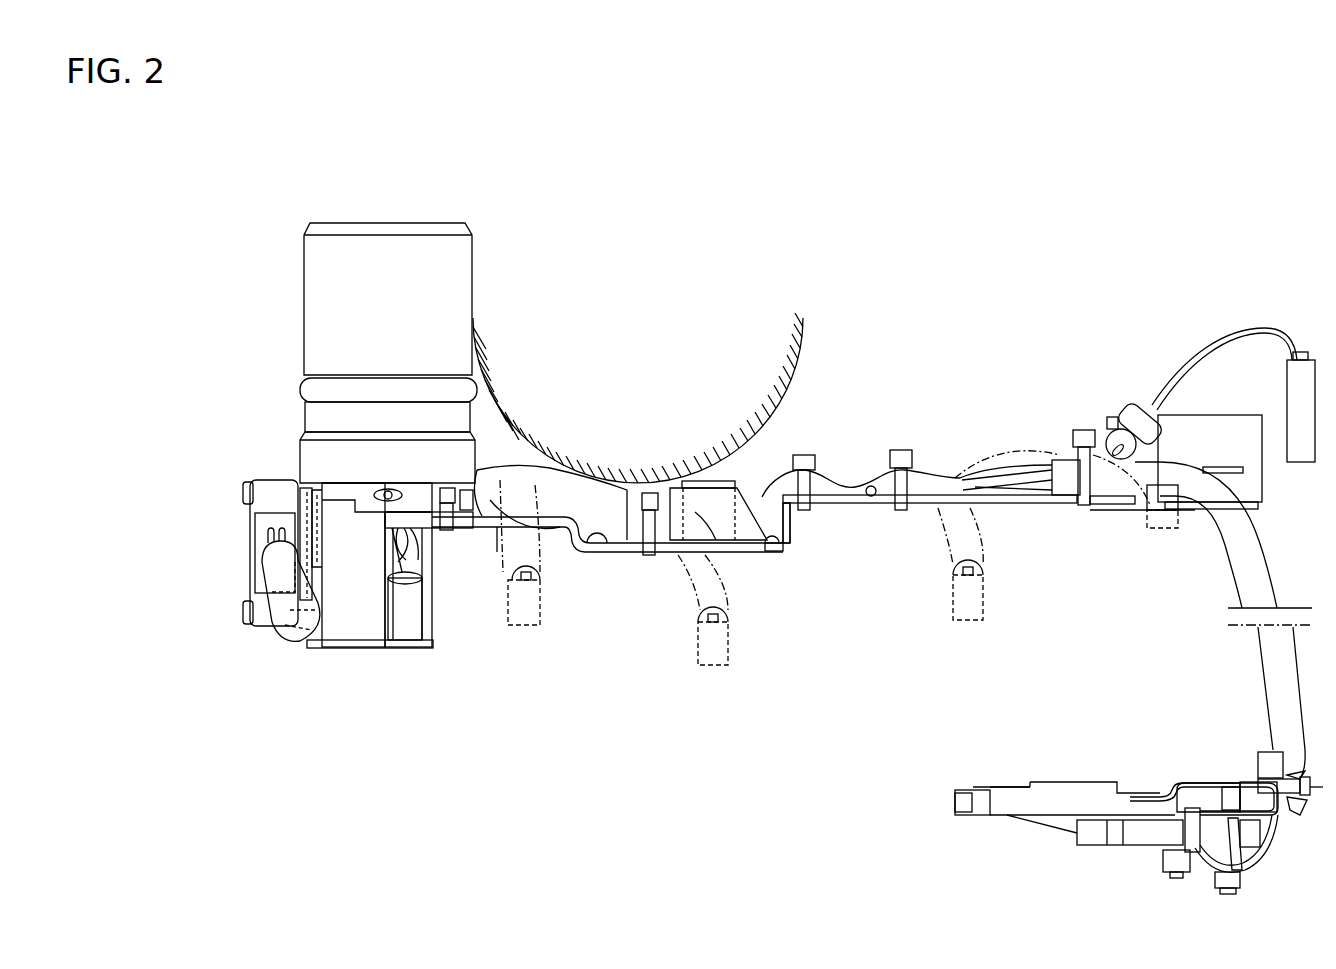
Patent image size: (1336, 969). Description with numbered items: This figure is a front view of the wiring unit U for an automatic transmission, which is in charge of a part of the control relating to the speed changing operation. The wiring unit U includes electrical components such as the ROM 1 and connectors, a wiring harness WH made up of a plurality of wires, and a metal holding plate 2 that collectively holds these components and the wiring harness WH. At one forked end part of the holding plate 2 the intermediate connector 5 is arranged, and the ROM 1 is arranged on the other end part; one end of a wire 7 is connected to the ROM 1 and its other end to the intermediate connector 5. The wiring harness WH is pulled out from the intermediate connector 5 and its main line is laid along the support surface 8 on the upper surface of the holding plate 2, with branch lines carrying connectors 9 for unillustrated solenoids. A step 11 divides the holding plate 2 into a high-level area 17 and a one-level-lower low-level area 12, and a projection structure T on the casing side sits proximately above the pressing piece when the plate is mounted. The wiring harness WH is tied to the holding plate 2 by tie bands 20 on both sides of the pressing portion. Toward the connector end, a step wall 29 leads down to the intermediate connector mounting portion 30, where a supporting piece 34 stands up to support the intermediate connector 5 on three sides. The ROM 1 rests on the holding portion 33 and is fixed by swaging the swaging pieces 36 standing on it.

The ROM 1 is at (270, 500).
The holding plate 2 is at (794, 545).
The intermediate connector 5 is at (312, 305).
The wire 7 is at (300, 640).
The support surface 8 is at (610, 556).
The connector 9 is at (527, 625).
The step 11 is at (790, 522).
The low-level area 12 is at (786, 550).
The high-level area 17 is at (869, 498).
The tie band 20 is at (447, 532).
The step wall 29 is at (432, 618).
The intermediate connector mounting portion 30 is at (418, 648).
The holding portion 33 is at (300, 524).
The supporting piece 34 is at (357, 648).
The swaging piece 36 is at (272, 480).
The projection structure T is at (812, 324).
The wiring unit U is at (982, 404).
The wiring harness WH is at (838, 482).